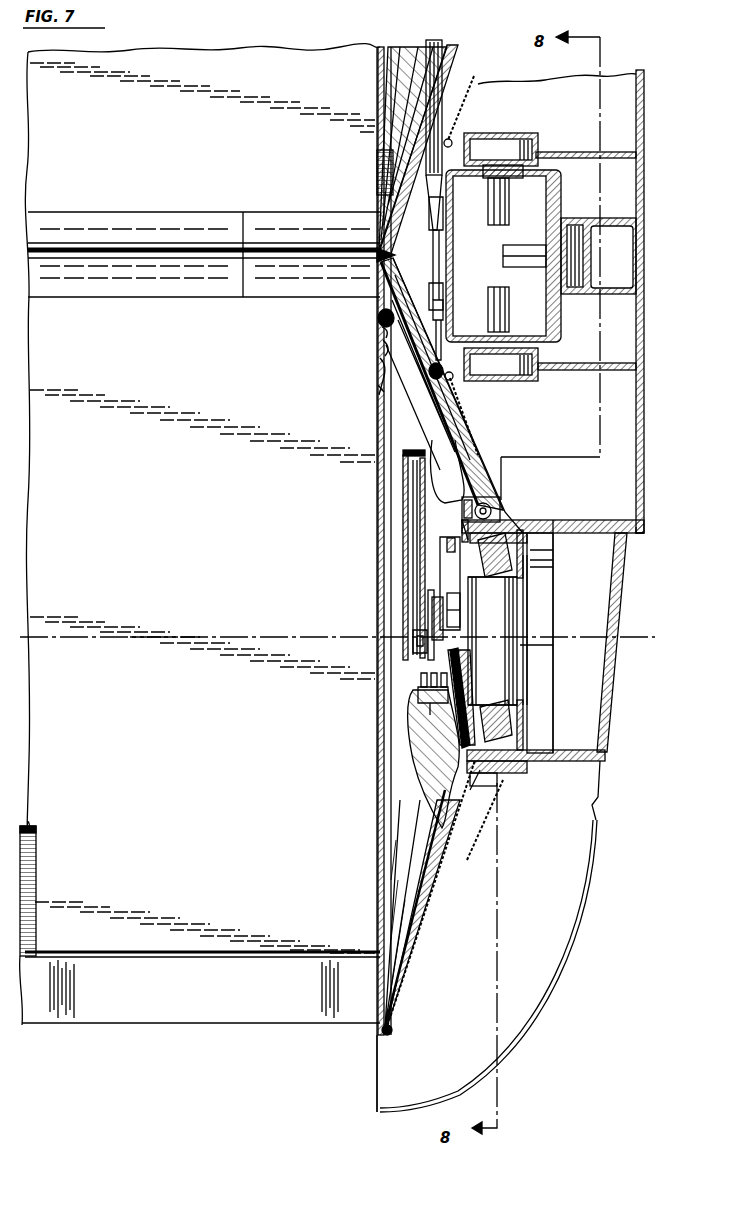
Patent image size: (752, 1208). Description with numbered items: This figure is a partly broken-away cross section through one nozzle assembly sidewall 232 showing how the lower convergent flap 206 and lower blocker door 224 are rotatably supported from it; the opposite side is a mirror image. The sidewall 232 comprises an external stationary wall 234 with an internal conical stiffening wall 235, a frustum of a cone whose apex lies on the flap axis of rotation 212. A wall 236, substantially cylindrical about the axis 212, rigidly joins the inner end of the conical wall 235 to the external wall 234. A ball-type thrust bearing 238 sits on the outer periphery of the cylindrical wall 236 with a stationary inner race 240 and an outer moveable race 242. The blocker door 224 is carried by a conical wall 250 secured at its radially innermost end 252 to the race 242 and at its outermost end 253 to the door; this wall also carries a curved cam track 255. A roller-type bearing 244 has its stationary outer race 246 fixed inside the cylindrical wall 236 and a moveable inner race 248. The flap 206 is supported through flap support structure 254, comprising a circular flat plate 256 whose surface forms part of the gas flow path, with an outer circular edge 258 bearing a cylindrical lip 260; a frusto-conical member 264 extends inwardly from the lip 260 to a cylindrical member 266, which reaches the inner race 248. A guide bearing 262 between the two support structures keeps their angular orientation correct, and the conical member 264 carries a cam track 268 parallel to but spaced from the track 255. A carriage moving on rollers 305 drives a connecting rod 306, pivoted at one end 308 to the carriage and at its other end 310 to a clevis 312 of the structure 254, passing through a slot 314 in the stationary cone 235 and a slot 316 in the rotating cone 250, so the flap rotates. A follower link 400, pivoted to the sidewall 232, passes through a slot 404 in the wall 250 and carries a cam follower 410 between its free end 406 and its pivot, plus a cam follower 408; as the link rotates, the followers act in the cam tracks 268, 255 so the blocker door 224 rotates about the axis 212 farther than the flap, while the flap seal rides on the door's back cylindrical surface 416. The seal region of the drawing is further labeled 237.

The flap 206 is at (205, 137).
The axis of rotation 212 is at (645, 642).
The blocker door 224 is at (206, 996).
The nozzle assembly sidewall 232 is at (592, 960).
The external stationary wall 234 is at (590, 870).
The conical stiffening wall 235 is at (412, 985).
The cylindrical wall 236 is at (527, 764).
The seal 237 is at (467, 733).
The thrust bearing 238 is at (509, 518).
The stationary inner race 240 is at (505, 780).
The outer moveable race 242 is at (482, 500).
The bearing 244 is at (518, 564).
The stationary outer race 246 is at (515, 531).
The moveable inner race 248 is at (495, 640).
The conical wall 250 is at (452, 92).
The radially innermost end 252 is at (475, 797).
The outermost end 253 is at (392, 1030).
The flap support structure 254 is at (366, 396).
The curved cam track 255 is at (445, 560).
The circular flat plate 256 is at (380, 361).
The outer circular edge 258 is at (380, 331).
The cylindrical lip 260 is at (383, 344).
The guide bearing 262 is at (378, 320).
The frusto-conical member 264 is at (430, 58).
The cylindrical member 266 is at (520, 650).
The cam track 268 is at (403, 508).
The rollers 305 is at (508, 161).
The connecting rod 306 is at (437, 40).
The connecting rod end 308 is at (451, 287).
The connecting rod other end 310 is at (437, 714).
The clevis 312 is at (425, 680).
The slot 314 is at (455, 140).
The slot 316 is at (420, 696).
The follower link 400 is at (438, 617).
The slot 404 is at (447, 648).
The free end 406 is at (452, 598).
The cam follower 408 is at (438, 602).
The cam follower 410 is at (418, 630).
The back cylindrical surface 416 is at (38, 875).